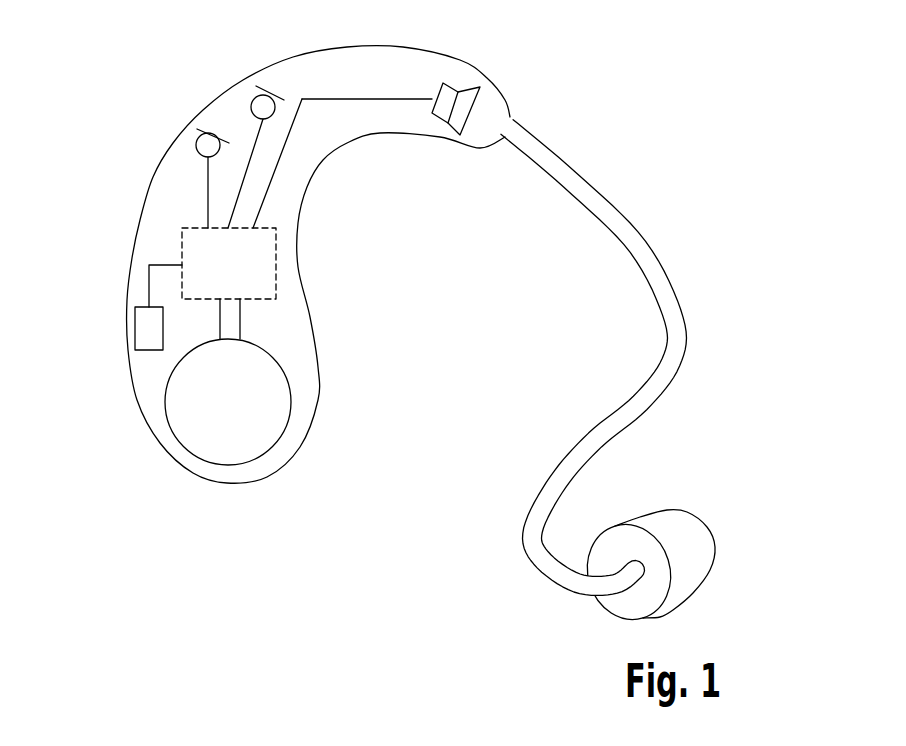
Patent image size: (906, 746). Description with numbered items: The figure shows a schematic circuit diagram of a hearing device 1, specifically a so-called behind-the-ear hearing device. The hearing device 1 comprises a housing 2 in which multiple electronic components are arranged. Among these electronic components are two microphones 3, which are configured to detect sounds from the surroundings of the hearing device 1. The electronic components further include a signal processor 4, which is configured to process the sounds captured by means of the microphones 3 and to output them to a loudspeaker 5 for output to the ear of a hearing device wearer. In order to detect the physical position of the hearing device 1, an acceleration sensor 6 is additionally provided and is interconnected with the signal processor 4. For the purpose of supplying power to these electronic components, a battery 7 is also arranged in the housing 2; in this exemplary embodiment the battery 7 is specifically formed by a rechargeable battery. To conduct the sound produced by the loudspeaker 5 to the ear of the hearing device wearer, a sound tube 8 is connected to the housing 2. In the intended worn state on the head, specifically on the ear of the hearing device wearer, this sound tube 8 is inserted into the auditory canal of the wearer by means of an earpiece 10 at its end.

The hearing device 1 is at (595, 80).
The housing 2 is at (230, 483).
The microphones 3 is at (202, 137).
The signal processor 4 is at (182, 243).
The loudspeaker 5 is at (468, 88).
The acceleration sensor 6 is at (135, 327).
The battery 7 is at (292, 403).
The sound tube 8 is at (685, 318).
The earpiece 10 is at (675, 510).